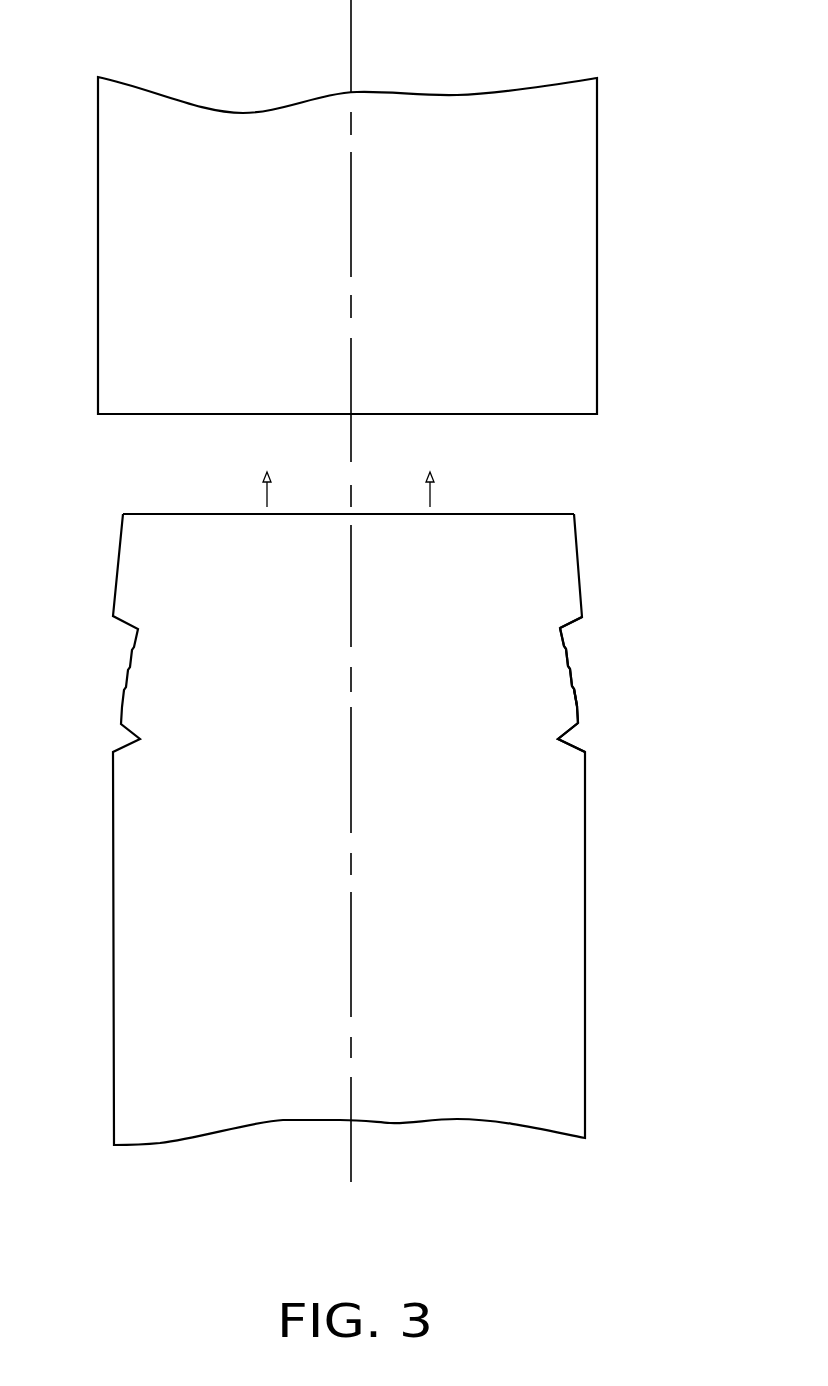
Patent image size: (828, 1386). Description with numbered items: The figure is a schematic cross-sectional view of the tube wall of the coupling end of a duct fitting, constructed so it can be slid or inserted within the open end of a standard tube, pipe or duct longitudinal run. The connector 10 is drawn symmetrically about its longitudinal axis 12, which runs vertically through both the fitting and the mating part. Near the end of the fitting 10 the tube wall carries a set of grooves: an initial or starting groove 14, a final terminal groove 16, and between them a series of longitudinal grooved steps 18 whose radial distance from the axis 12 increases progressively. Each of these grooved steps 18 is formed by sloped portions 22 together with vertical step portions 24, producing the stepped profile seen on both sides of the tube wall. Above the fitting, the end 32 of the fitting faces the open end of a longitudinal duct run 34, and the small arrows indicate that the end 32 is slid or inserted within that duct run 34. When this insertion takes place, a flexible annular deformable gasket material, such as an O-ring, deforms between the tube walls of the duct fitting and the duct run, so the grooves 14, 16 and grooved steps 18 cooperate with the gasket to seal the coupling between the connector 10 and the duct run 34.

The connector 10 is at (663, 1103).
The axis 12 is at (351, 557).
The initial groove 14 is at (583, 622).
The final terminal groove 16 is at (570, 737).
The longitudinal grooved steps 18 is at (585, 640).
The sloped portions 22 is at (573, 698).
The vertical step portions 24 is at (573, 707).
The end of the fitting 32 is at (527, 514).
The longitudinal duct run 34 is at (550, 414).